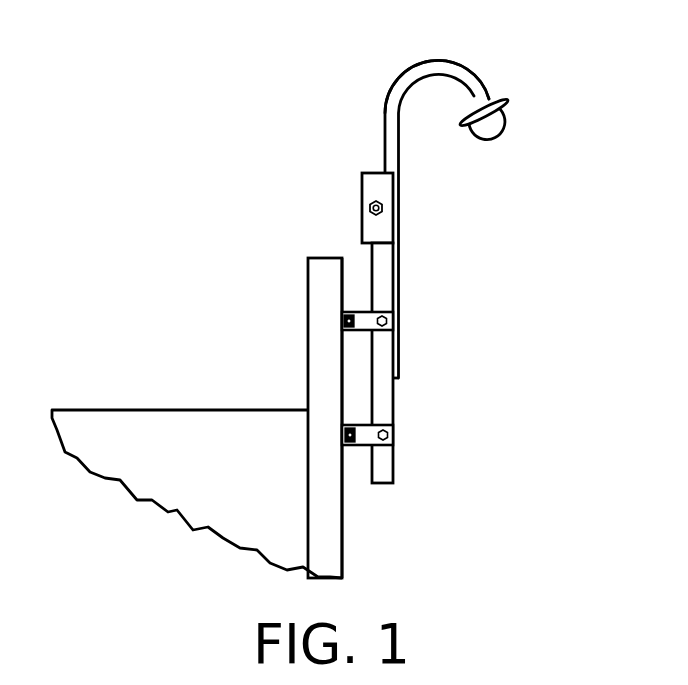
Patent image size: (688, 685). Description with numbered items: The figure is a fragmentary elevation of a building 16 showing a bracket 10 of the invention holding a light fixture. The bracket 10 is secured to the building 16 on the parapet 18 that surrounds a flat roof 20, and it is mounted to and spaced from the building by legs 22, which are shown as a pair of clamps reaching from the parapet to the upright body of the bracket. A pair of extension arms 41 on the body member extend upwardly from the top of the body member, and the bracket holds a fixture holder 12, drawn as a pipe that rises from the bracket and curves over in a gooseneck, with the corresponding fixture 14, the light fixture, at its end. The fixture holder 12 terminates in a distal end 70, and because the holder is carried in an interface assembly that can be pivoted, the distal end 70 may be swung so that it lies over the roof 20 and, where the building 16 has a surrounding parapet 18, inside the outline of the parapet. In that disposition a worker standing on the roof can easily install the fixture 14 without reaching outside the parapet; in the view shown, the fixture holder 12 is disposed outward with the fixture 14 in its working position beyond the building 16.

The bracket 10 is at (395, 467).
The fixture holder 12 is at (385, 122).
The fixture 14 is at (497, 100).
The building 16 is at (343, 535).
The parapet 18 is at (307, 301).
The flat roof 20 is at (155, 410).
The legs 22 is at (358, 423).
The extension arms 41 is at (362, 197).
The distal end 70 is at (457, 63).